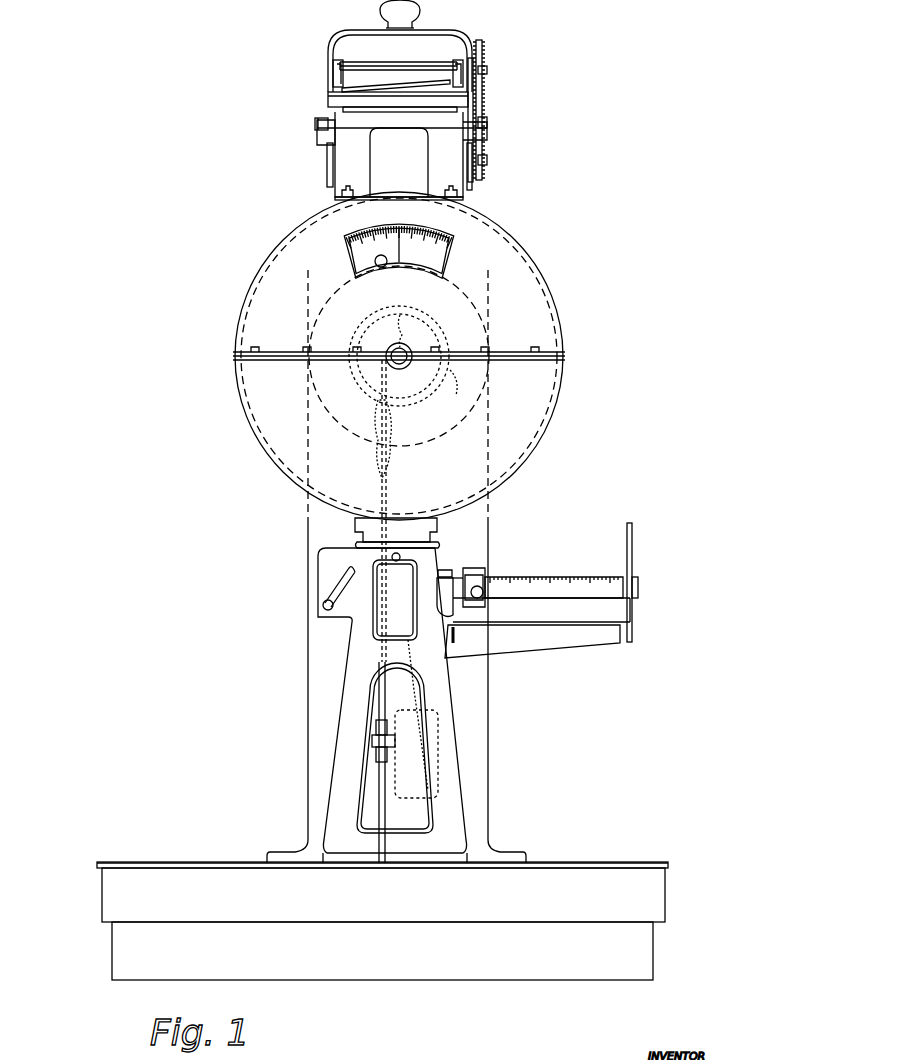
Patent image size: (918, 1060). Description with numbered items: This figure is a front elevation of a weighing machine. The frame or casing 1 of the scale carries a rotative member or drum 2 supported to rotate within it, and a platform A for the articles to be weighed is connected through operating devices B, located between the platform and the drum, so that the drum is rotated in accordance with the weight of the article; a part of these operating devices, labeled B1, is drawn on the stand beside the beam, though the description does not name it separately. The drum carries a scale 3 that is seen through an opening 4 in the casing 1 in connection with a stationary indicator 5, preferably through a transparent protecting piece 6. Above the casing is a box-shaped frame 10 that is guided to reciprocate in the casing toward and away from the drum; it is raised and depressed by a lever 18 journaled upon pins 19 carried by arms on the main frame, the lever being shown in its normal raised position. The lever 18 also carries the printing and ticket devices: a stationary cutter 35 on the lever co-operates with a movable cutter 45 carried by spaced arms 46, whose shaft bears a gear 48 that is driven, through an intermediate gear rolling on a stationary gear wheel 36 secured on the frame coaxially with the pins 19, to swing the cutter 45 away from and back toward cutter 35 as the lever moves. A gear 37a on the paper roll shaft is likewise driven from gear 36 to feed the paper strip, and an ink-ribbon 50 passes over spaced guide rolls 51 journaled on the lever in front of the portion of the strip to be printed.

The frame or casing 1 is at (270, 275).
The rotative member or drum 2 is at (484, 245).
The scale 3 is at (358, 266).
The opening 4 is at (436, 260).
The stationary indicator 5 is at (399, 203).
The transparent protecting piece 6 is at (381, 268).
The box-shaped frame 10 is at (364, 126).
The lever 18 is at (328, 42).
The pins 19 is at (316, 120).
The stationary cutter 35 is at (420, 90).
The stationary gear wheel 36 is at (489, 141).
The gear 37a is at (486, 178).
The cutter 45 is at (452, 82).
The spaced arms 46 is at (446, 75).
The gear 48 is at (490, 47).
The ink-ribbon 50 is at (386, 92).
The spaced guide rolls 51 is at (331, 92).
The platform A is at (110, 905).
The operating devices B is at (373, 417).
The poise B1 is at (468, 577).